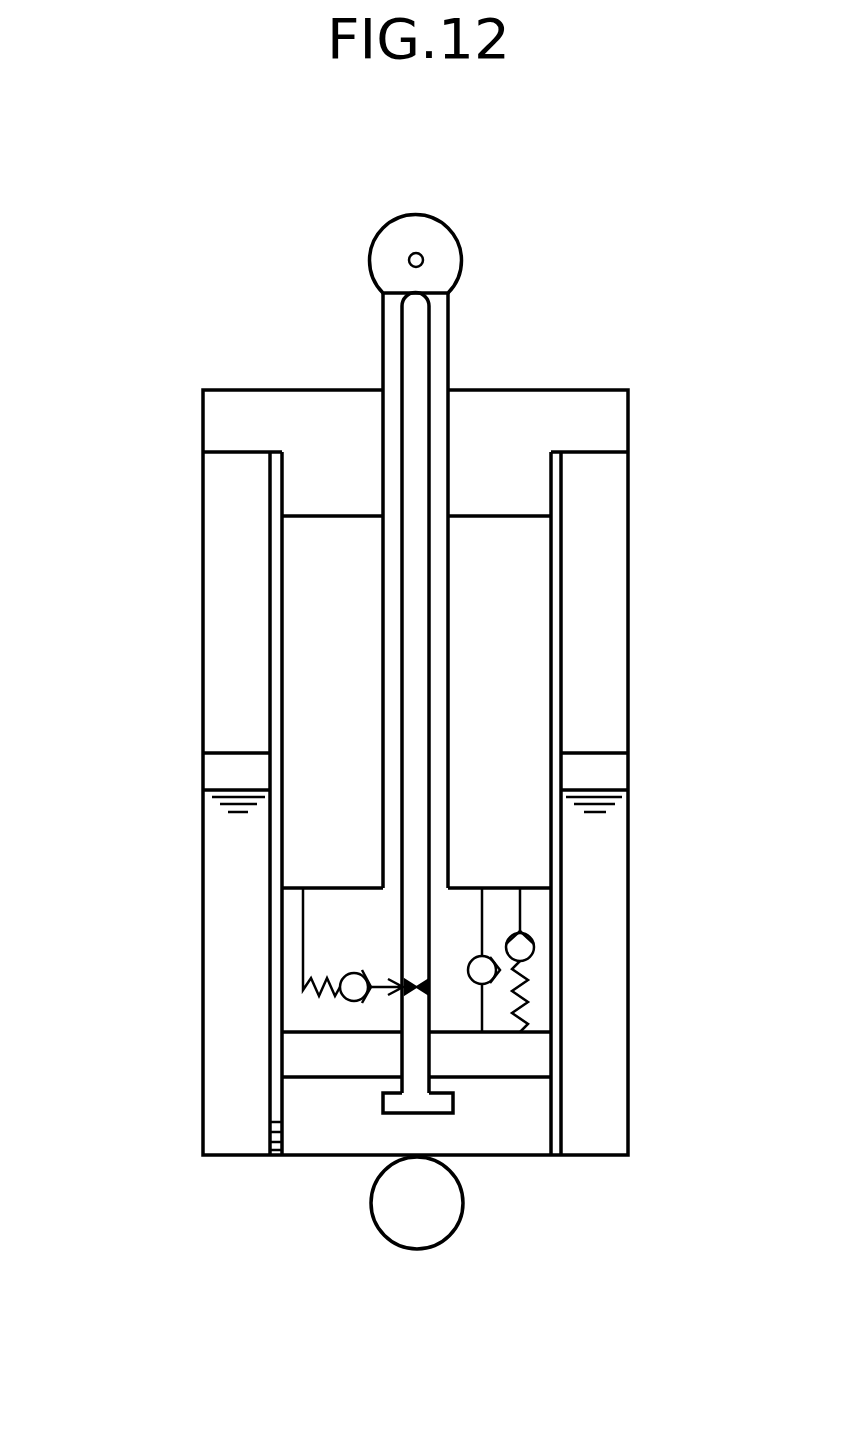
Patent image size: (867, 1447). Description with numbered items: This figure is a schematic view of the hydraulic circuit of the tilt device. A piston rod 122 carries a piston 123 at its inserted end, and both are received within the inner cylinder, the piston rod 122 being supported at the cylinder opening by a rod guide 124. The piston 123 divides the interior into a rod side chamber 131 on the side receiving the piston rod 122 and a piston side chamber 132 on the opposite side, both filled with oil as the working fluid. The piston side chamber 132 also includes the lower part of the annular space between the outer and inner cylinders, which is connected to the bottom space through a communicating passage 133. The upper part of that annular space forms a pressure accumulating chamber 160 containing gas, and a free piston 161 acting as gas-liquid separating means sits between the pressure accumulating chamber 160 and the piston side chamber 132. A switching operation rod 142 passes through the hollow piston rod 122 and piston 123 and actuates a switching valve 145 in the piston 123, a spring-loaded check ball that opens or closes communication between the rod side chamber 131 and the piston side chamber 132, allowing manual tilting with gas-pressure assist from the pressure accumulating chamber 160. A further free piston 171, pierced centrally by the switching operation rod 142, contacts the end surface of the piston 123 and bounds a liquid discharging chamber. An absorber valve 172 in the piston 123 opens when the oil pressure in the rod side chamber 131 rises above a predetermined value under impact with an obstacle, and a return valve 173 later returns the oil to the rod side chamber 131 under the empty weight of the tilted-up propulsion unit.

The piston rod 122 is at (430, 232).
The rod guide 124 is at (270, 400).
The switching operation rod 142 is at (418, 367).
The rod side chamber 131 is at (517, 663).
The pressure accumulating chamber 160 is at (242, 592).
The free piston 161 is at (220, 770).
The piston 123 is at (355, 905).
The switching valve 145 is at (343, 1003).
The absorber valve 172 is at (527, 947).
The return valve 173 is at (490, 971).
The free piston 171 is at (300, 1053).
The communicating passage 133 is at (273, 1130).
The piston side chamber 132 is at (334, 1137).